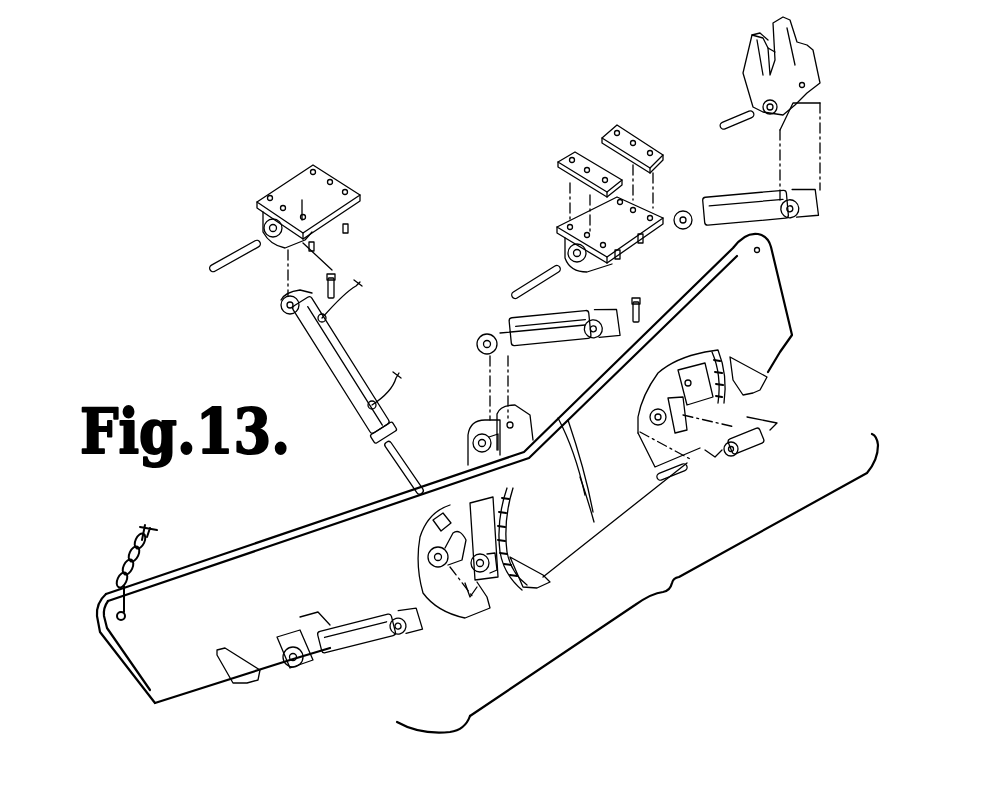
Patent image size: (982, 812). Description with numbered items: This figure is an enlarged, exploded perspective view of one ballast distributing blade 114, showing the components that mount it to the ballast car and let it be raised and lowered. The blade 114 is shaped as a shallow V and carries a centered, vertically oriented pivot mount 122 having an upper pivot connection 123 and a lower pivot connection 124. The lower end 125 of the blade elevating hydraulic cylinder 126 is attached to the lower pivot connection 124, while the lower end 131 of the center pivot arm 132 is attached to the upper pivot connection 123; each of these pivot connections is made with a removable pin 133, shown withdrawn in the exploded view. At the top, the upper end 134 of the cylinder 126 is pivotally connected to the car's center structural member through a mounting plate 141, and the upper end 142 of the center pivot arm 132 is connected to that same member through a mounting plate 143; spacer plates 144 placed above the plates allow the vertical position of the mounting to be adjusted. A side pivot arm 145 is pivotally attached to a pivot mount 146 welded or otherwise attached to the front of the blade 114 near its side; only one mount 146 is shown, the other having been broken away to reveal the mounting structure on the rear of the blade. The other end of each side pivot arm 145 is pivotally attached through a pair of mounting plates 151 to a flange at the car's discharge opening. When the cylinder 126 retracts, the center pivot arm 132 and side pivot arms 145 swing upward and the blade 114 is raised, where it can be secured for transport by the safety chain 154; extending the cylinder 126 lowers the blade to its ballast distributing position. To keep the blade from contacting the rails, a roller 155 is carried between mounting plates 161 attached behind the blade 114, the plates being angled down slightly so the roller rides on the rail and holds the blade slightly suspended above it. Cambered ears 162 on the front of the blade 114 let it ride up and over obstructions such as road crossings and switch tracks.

The ballast distributing blade 114 is at (274, 592).
The pivot mount 122 is at (467, 463).
The upper pivot connection 123 is at (462, 442).
The lower pivot connection 124 is at (493, 561).
The lower end of hydraulic cylinder 125 is at (455, 578).
The blade elevating hydraulic cylinder 126 is at (362, 435).
The lower end of center pivot arm 131 is at (493, 333).
The center pivot arm 132 is at (556, 340).
The removable pin 133 is at (228, 250).
The upper end of hydraulic cylinder 134 is at (292, 320).
The mounting plate 141 is at (303, 176).
The upper end of center pivot arm 142 is at (636, 328).
The mounting plate 143 is at (572, 221).
The spacer plates 144 is at (603, 134).
The side pivot arm 145 is at (740, 200).
The pivot mount 146 is at (307, 670).
The mounting plates 151 is at (812, 63).
The safety chain 154 is at (127, 570).
The roller 155 is at (760, 437).
The roller mounting plate 161 is at (708, 380).
The cambered ear 162 is at (540, 585).